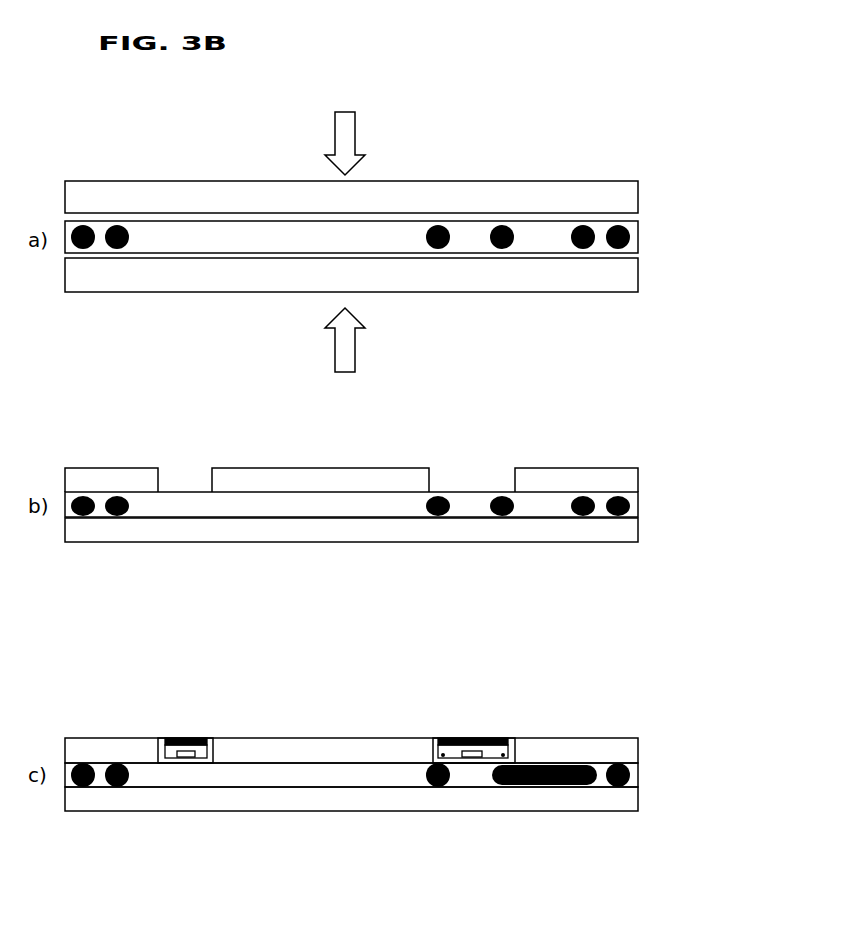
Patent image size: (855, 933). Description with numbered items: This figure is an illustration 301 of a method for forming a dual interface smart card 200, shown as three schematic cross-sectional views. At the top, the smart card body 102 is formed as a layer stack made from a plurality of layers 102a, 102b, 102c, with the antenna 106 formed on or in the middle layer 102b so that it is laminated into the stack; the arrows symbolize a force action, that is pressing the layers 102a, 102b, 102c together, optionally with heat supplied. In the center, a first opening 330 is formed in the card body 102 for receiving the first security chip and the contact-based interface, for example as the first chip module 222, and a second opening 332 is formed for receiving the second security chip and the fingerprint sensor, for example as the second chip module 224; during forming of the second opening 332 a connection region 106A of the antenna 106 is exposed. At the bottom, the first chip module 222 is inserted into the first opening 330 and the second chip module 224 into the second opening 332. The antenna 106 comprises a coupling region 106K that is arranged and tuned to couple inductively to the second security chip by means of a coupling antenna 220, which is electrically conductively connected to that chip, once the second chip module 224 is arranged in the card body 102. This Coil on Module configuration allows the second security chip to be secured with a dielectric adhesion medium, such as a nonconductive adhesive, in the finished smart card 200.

The smart card body 102 is at (428, 236).
The layer 102a is at (640, 278).
The layer 102b is at (640, 240).
The layer 102c is at (640, 203).
The antenna 106 is at (117, 224).
The connection region 106A is at (525, 229).
The coupling region 106K is at (502, 787).
The pressing step 301 is at (625, 92).
The first opening 330 is at (167, 482).
The second opening 332 is at (457, 482).
The dual interface smart card 200 is at (640, 712).
The coupling antenna 220 is at (432, 752).
The first chip module 222 is at (187, 722).
The second chip module 224 is at (470, 728).